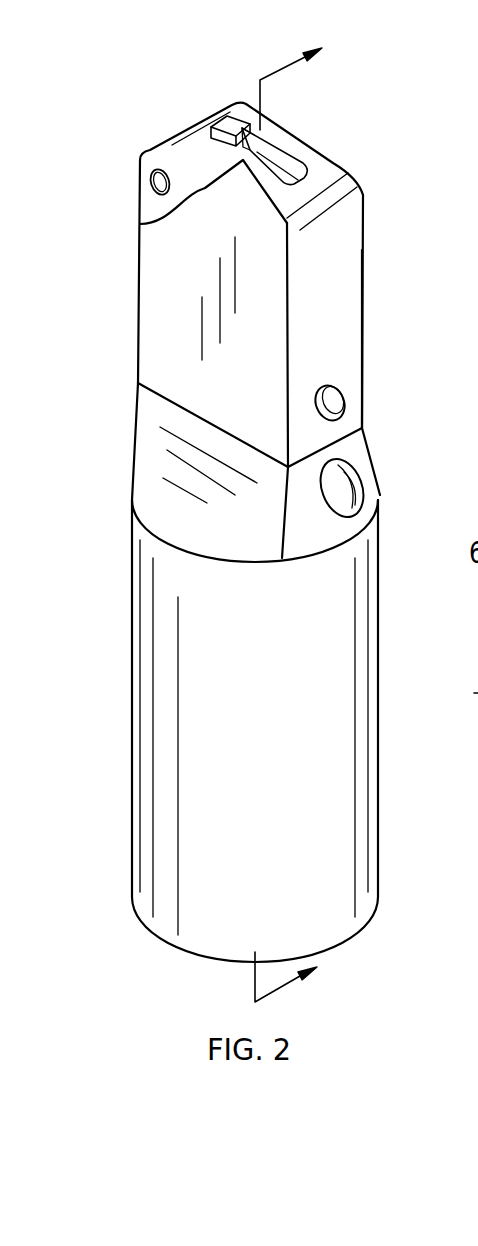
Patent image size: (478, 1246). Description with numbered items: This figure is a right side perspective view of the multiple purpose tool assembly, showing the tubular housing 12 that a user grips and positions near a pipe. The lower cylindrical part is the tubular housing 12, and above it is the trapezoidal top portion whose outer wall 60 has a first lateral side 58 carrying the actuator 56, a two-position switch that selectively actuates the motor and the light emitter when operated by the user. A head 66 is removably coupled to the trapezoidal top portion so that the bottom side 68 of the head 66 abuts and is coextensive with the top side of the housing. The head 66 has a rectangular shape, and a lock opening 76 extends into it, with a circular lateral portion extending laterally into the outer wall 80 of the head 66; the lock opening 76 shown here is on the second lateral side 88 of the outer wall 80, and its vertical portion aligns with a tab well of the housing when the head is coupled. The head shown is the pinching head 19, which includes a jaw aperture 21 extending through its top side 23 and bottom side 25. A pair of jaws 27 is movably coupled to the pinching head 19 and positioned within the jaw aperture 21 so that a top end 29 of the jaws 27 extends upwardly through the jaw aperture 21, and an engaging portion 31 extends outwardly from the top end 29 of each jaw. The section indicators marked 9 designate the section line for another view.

The tubular housing 12 is at (394, 648).
The pinching head 19 is at (143, 154).
The jaw aperture 21 is at (205, 150).
The top side 23 is at (330, 170).
The bottom side 25 is at (217, 425).
The pair of jaws 27 is at (293, 163).
The top end 29 is at (211, 127).
The engaging portion 31 is at (246, 110).
The actuator 56 is at (363, 474).
The first lateral side 58 is at (357, 447).
The outer wall 60 is at (148, 443).
The head 66 is at (386, 182).
The bottom side 68 is at (148, 393).
The lock opening 76 is at (340, 403).
The outer wall 80 is at (348, 355).
The second lateral side 88 is at (345, 313).
The section line 9- 9 is at (299, 522).